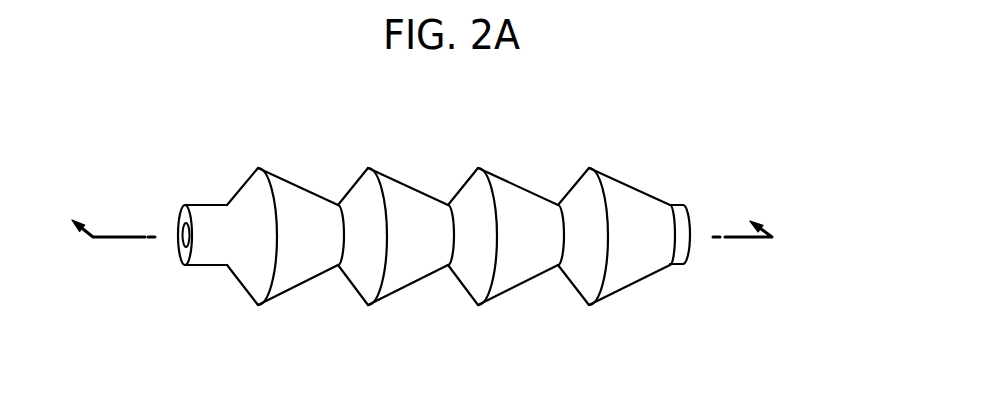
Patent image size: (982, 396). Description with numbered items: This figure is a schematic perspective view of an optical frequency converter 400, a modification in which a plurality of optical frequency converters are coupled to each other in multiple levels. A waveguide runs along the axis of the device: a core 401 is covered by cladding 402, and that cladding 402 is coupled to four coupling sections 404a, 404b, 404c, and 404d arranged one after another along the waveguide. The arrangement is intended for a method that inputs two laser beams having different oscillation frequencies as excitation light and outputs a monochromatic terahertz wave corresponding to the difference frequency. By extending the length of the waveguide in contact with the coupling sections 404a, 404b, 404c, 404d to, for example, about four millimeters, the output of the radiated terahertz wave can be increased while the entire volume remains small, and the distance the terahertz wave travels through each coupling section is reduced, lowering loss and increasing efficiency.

The optical frequency converter 400 is at (456, 241).
The core 401 is at (184, 238).
The cladding 402 is at (241, 282).
The coupling section 404a is at (288, 197).
The coupling section 404b is at (405, 197).
The coupling section 404c is at (512, 197).
The coupling section 404d is at (622, 197).